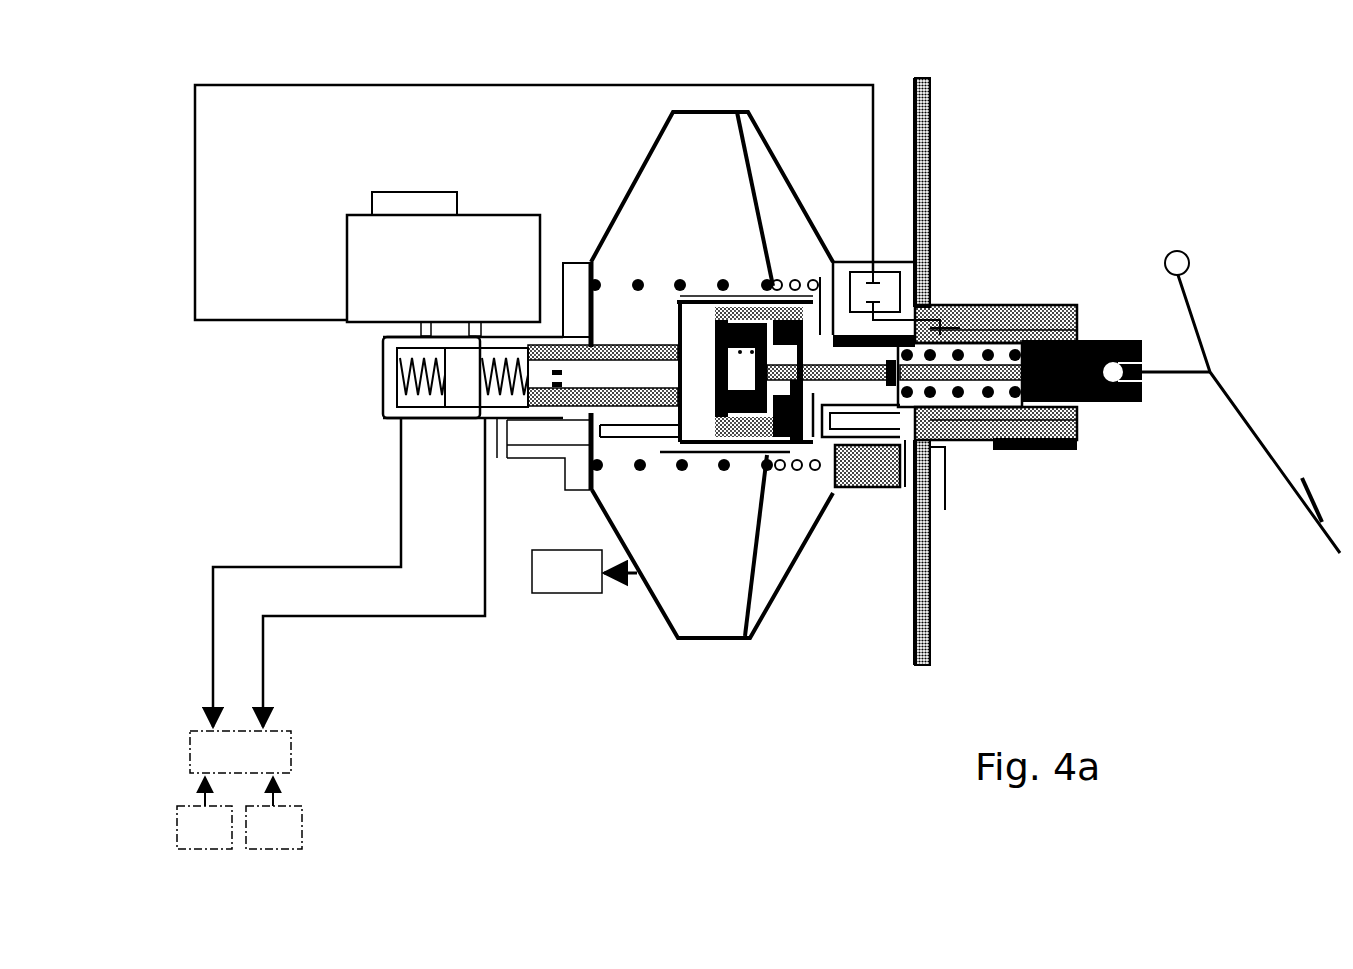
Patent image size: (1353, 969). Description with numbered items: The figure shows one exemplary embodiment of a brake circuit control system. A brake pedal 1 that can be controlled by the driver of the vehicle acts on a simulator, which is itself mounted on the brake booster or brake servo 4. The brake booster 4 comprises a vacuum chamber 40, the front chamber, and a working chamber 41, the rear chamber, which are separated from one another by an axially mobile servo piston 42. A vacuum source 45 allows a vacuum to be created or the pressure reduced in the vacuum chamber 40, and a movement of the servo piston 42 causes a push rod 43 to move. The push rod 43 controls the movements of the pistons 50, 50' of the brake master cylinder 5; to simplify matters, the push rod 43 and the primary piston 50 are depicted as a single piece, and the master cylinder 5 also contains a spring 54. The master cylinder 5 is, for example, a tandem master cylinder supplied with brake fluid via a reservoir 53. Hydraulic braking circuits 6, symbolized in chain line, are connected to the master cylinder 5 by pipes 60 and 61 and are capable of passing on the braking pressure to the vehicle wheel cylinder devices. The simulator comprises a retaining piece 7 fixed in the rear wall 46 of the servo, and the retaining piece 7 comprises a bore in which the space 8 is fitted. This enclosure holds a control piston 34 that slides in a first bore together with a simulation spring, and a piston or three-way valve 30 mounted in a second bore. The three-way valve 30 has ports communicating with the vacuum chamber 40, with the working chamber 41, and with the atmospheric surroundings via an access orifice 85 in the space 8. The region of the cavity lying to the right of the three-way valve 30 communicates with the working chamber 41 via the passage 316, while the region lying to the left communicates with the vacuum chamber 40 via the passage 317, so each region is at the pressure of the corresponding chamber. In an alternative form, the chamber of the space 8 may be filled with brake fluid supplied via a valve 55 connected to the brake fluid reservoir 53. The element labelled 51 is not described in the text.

The brake pedal 1 is at (1288, 466).
The brake booster 4 is at (726, 108).
The brake master cylinder 5 is at (372, 419).
The hydraulic braking circuits 6 is at (292, 752).
The retaining piece 7 is at (1022, 304).
The space 8 is at (892, 337).
The three-way valve 30 is at (797, 445).
The control piston 34 is at (1090, 340).
The vacuum chamber 40 is at (678, 172).
The working chamber 41 is at (775, 185).
The servo piston 42 is at (760, 146).
The push rod 43 is at (650, 340).
The vacuum source 45 is at (560, 593).
The rear wall 46 is at (777, 597).
The primary piston 50 is at (570, 405).
The piston 50' is at (405, 407).
The spring 51 is at (478, 402).
The reservoir 53 is at (362, 246).
The spring 54 is at (412, 357).
The valve 55 is at (905, 292).
The pipe 60 is at (401, 540).
The pipe 61 is at (485, 588).
The access orifice 85 is at (867, 450).
The passage 316 is at (832, 272).
The passage 317 is at (590, 468).